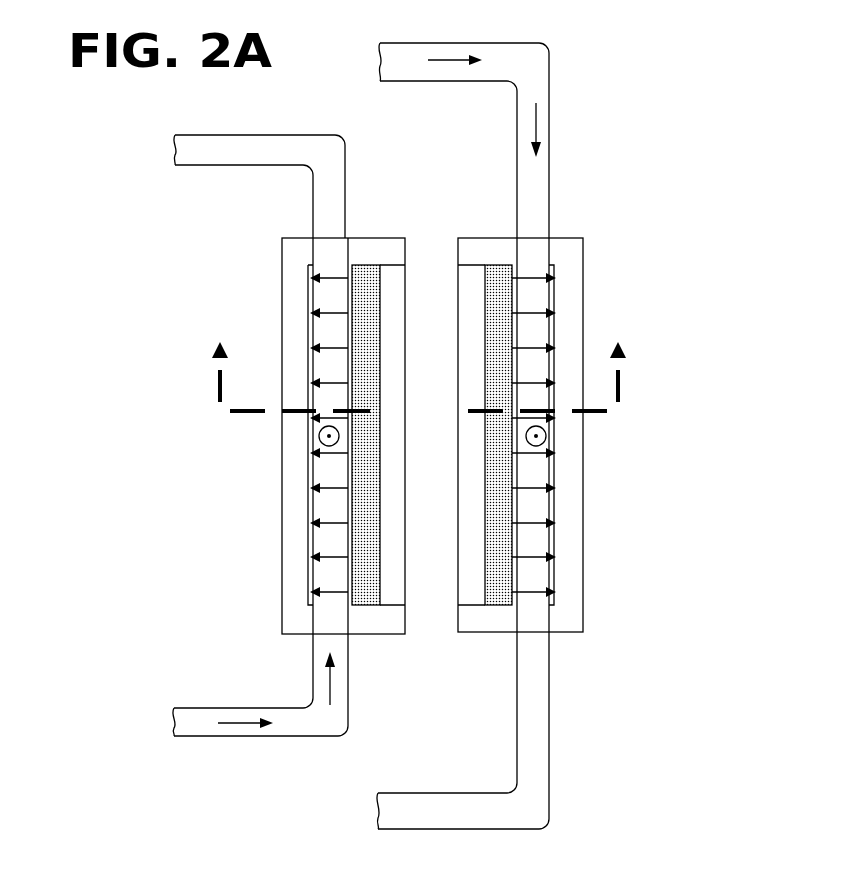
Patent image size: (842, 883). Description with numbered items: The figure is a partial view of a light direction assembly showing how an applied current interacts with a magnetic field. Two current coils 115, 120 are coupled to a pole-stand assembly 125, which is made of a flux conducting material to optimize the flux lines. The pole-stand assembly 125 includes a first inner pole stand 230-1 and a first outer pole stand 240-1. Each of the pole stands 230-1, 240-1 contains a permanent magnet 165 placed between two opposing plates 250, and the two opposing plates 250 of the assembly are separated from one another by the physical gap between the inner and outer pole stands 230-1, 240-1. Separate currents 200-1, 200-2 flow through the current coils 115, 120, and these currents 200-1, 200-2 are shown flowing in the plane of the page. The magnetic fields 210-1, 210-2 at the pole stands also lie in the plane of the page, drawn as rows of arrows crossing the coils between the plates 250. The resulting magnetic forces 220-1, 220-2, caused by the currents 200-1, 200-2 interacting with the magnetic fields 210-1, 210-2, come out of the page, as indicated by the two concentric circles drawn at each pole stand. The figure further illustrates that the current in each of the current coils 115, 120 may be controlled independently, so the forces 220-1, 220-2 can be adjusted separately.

The current coil 115 is at (245, 167).
The current coil 120 is at (552, 740).
The pole-stand assembly 125 is at (618, 121).
The permanent magnet 165 is at (365, 265).
The current 200-1 is at (260, 670).
The current 200-2 is at (464, 134).
The magnetic field 210-1 is at (318, 306).
The magnetic field 210-2 is at (545, 560).
The magnetic force 220-1 is at (319, 438).
The magnetic force 220-2 is at (546, 438).
The inner pole stand 230-1 is at (146, 434).
The outer pole stand 240-1 is at (673, 417).
The opposing plates 250 is at (292, 348).